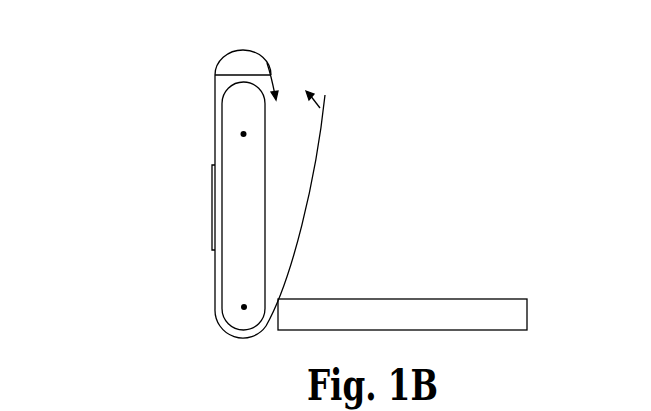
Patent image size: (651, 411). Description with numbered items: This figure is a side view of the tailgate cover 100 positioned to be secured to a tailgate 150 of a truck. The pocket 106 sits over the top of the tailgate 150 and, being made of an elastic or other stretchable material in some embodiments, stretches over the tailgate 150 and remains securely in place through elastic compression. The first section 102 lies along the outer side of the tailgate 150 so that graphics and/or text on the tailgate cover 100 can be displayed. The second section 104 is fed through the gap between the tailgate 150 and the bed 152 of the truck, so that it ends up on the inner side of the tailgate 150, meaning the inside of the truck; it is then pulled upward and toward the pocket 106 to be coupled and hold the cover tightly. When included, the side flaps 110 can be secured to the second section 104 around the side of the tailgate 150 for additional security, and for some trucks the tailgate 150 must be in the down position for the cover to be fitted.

The tailgate cover 100 is at (115, 95).
The first section 102 is at (215, 118).
The second section 104 is at (322, 128).
The pocket 106 is at (248, 58).
The side flaps 110 is at (212, 210).
The tailgate 150 is at (258, 197).
The bed 152 is at (476, 305).